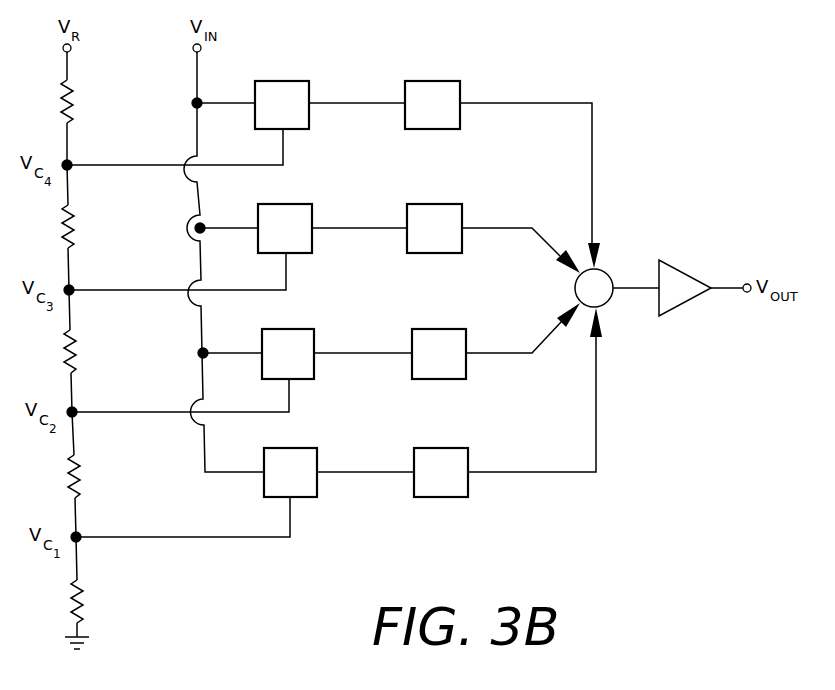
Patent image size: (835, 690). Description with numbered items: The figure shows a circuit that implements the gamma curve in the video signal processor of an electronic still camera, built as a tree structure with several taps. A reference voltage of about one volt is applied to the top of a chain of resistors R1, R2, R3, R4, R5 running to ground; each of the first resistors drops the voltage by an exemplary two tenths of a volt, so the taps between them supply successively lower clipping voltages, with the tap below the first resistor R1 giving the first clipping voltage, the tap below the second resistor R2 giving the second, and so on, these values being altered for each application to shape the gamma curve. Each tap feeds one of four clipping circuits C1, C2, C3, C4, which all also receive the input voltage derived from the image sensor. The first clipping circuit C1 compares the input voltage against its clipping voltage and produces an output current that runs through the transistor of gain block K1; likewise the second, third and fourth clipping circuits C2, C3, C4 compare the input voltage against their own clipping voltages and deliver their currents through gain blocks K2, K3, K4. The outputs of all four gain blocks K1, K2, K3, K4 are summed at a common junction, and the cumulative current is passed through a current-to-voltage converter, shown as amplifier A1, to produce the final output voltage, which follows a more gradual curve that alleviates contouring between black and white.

The first resistor R1 is at (84, 101).
The second resistor R2 is at (85, 226).
The third resistor R3 is at (87, 351).
The fourth resistor R4 is at (90, 476).
The fifth resistor R5 is at (92, 601).
The first clipping circuit C1 is at (290, 472).
The second clipping circuit C2 is at (258, 354).
The third clipping circuit C3 is at (256, 228).
The fourth clipping circuit C4 is at (253, 105).
The gain block K1 is at (392, 472).
The gain block K2 is at (390, 354).
The gain block K3 is at (387, 228).
The gain block K4 is at (384, 105).
The current-to-voltage converter A1 is at (685, 288).